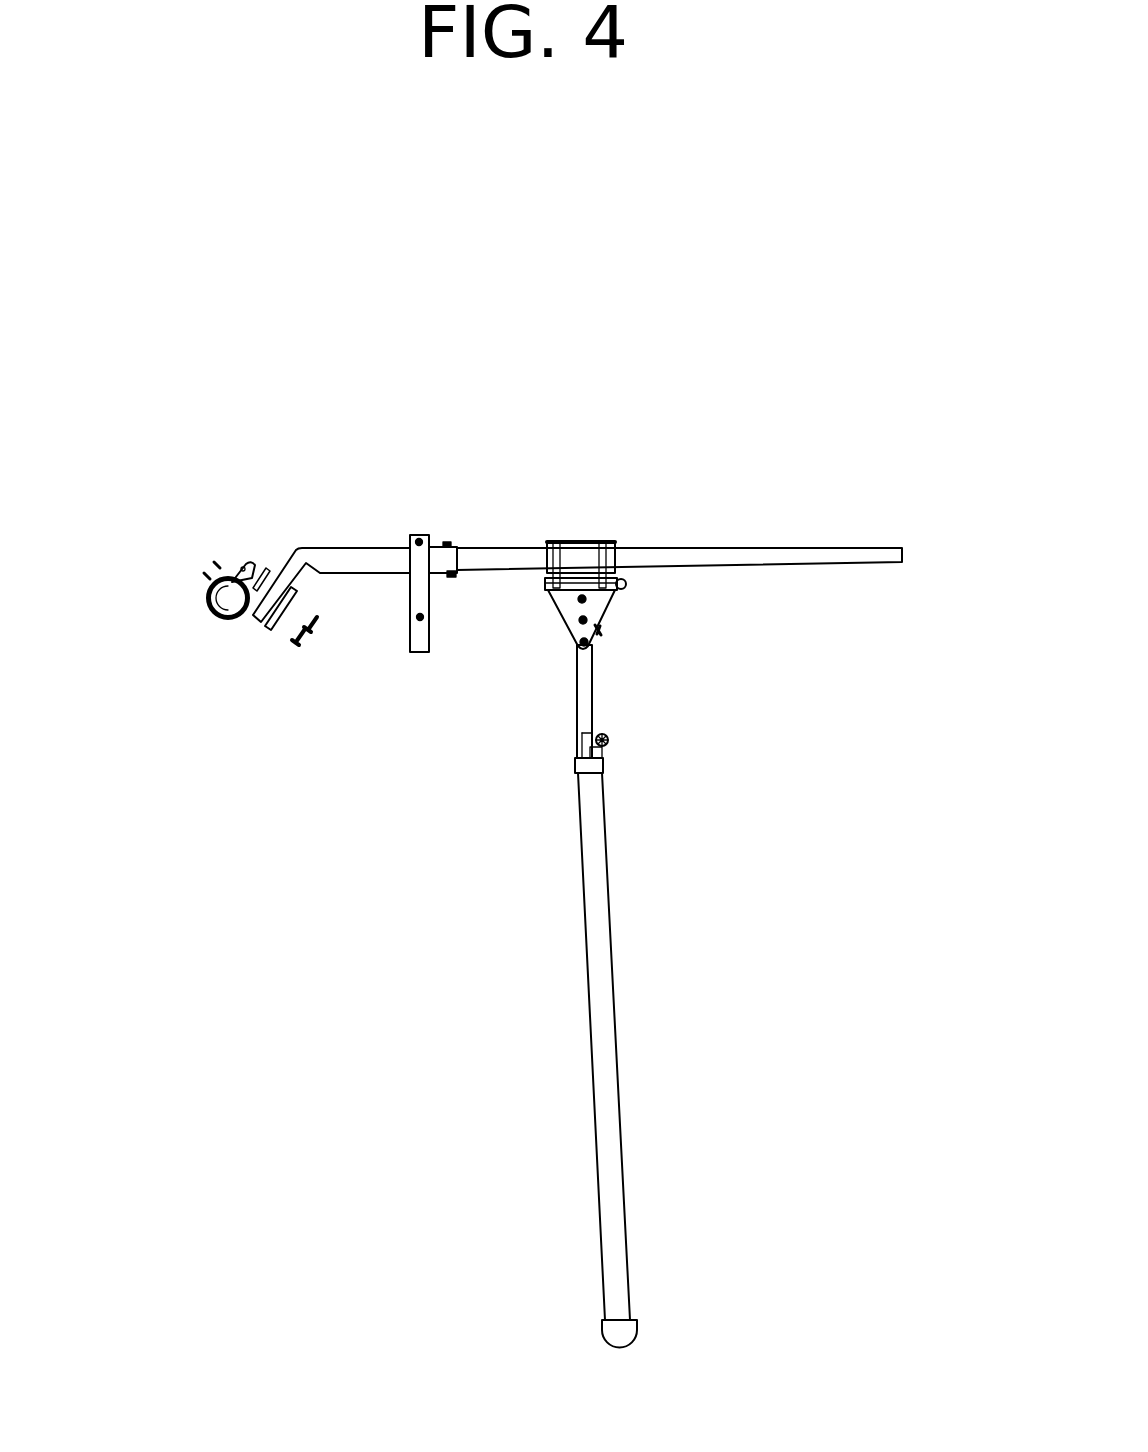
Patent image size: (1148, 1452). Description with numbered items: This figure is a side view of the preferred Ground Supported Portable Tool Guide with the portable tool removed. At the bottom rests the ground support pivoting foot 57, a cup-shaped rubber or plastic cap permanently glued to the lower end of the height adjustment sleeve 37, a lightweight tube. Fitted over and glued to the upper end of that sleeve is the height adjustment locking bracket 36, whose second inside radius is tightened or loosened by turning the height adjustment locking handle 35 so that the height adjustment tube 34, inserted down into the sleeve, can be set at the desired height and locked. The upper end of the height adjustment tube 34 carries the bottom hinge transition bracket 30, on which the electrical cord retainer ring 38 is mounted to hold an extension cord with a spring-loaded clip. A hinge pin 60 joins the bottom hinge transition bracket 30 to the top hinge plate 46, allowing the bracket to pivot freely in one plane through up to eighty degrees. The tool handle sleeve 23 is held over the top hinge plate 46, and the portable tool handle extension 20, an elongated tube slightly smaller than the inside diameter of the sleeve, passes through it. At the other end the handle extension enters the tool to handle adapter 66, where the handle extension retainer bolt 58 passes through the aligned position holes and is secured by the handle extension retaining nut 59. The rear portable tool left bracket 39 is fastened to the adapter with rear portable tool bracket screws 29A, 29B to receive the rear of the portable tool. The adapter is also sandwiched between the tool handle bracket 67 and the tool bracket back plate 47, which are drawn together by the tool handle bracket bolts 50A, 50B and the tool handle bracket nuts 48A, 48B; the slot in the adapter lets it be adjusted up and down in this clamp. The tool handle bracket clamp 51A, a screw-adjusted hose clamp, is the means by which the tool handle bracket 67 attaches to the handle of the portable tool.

The portable tool handle extension 20 is at (802, 546).
The tool handle sleeve 23 is at (580, 542).
The rear portable tool bracket screw 29A is at (421, 624).
The rear portable tool bracket screw 29B is at (418, 539).
The bottom hinge transition bracket 30 is at (615, 608).
The height adjustment tube 34 is at (592, 687).
The height adjustment locking handle 35 is at (606, 741).
The height adjustment locking bracket 36 is at (605, 772).
The height adjustment sleeve 37 is at (615, 1095).
The electrical cord retainer ring 38 is at (601, 635).
The rear portable tool left bracket 39 is at (421, 541).
The top hinge plate 46 is at (598, 628).
The tool bracket back plate 47 is at (272, 632).
The tool handle bracket nut 48A is at (205, 573).
The tool handle bracket nut 48B is at (216, 560).
The tool handle bracket bolt 50A is at (304, 645).
The tool handle bracket bolt 50B is at (315, 627).
The tool handle bracket clamp 51A is at (217, 620).
The ground support pivoting foot 57 is at (637, 1320).
The handle extension retainer bolt 58 is at (448, 543).
The handle extension retaining nut 59 is at (455, 576).
The hinge pin 60 is at (625, 581).
The tool to handle adapter 66 is at (310, 546).
The tool handle bracket 67 is at (264, 568).